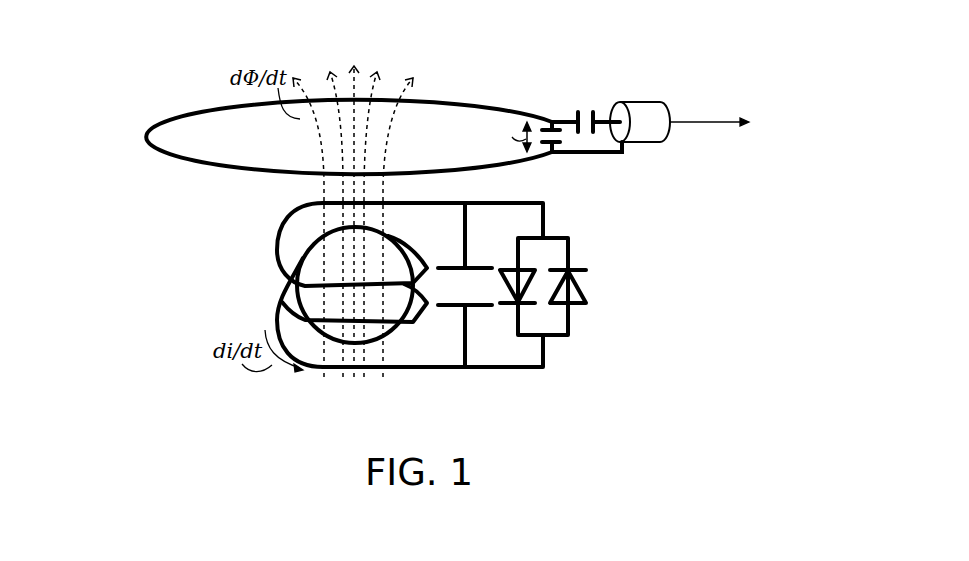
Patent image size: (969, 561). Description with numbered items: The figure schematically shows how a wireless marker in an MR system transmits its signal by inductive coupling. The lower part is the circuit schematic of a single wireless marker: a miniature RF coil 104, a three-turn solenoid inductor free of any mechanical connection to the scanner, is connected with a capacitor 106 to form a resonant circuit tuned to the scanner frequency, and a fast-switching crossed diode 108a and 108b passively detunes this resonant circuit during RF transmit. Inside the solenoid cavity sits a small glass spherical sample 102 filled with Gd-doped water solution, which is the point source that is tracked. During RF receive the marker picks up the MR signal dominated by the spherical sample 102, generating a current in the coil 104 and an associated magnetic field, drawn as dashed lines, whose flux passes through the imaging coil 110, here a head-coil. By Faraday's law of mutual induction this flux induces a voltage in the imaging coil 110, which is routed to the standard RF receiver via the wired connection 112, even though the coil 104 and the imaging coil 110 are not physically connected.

The spherical sample 102 is at (303, 291).
The miniature RF coil 104 is at (278, 249).
The capacitor 106 is at (480, 305).
The crossed diode 108a is at (530, 268).
The crossed diode 108b is at (578, 290).
The imaging coil 110 is at (147, 140).
The wired connection 112 is at (633, 89).